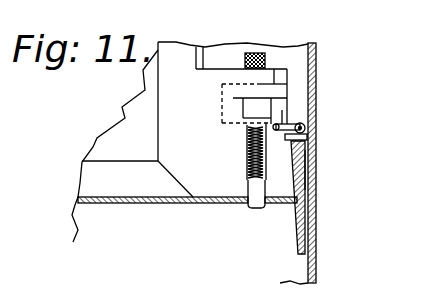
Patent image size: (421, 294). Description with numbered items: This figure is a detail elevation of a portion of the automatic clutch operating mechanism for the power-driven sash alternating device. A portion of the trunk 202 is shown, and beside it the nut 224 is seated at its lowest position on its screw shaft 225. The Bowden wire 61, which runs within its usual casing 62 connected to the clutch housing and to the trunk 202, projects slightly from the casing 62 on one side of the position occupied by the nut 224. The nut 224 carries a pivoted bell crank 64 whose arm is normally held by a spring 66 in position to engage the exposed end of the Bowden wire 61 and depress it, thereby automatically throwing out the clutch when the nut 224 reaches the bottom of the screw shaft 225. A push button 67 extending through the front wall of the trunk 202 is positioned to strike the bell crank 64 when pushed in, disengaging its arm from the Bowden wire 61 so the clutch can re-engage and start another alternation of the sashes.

The trunk 202 is at (314, 47).
The nut 224 is at (278, 110).
The screw shaft 225 is at (265, 52).
The spring 66 is at (290, 137).
The push button 67 is at (306, 128).
The bell crank 64 is at (308, 136).
The Bowden wire 61 is at (306, 172).
The casing 62 is at (302, 224).